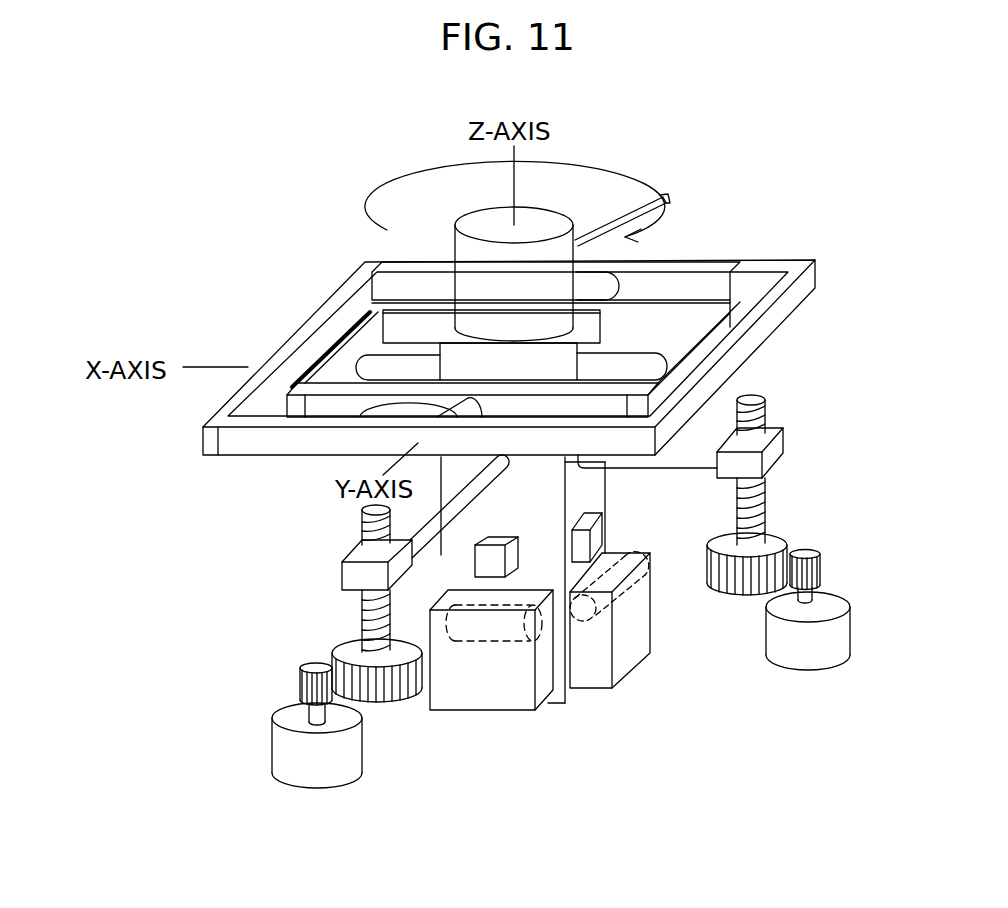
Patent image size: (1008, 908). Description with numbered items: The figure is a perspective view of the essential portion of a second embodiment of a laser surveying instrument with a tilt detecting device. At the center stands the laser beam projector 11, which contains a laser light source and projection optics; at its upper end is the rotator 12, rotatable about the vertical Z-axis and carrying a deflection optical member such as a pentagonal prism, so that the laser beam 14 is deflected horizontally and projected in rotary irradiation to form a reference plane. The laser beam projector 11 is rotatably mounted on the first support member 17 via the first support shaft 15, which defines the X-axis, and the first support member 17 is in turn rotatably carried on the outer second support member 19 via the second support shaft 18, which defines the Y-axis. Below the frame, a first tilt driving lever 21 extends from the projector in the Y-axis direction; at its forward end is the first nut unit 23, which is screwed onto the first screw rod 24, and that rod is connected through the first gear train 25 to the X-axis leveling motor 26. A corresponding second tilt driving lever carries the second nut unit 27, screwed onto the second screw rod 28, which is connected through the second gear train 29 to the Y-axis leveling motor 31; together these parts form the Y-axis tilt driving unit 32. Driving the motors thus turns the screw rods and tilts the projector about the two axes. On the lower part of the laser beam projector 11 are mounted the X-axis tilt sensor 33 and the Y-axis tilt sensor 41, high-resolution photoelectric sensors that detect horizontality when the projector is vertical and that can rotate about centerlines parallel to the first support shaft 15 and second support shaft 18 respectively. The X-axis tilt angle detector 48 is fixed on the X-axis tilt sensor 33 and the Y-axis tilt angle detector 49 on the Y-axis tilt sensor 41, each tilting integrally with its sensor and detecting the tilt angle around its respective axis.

The laser beam projector 11 is at (607, 490).
The rotator 12 is at (473, 208).
The laser beam 14 is at (633, 207).
The first support shaft (X-axis) 15 is at (383, 347).
The first support member 17 is at (680, 300).
The second support shaft (Y-axis) 18 is at (362, 416).
The second support member 19 is at (785, 320).
The first tilt driving lever 21 is at (420, 543).
The first nut unit 23 is at (342, 575).
The first screw rod 24 is at (363, 617).
The first gear train 25 is at (400, 707).
The X-axis leveling motor 26 is at (353, 780).
The second nut unit 27 is at (786, 442).
The second screw rod 28 is at (765, 505).
The second gear train 29 is at (792, 540).
The Y-axis leveling motor 31 is at (763, 652).
The Y-axis tilt driving unit 32 is at (697, 447).
The X-axis tilt sensor 33 is at (640, 667).
The Y-axis tilt sensor 41 is at (505, 712).
The X-axis tilt angle detector 48 is at (607, 528).
The Y-axis tilt angle detector 49 is at (498, 537).